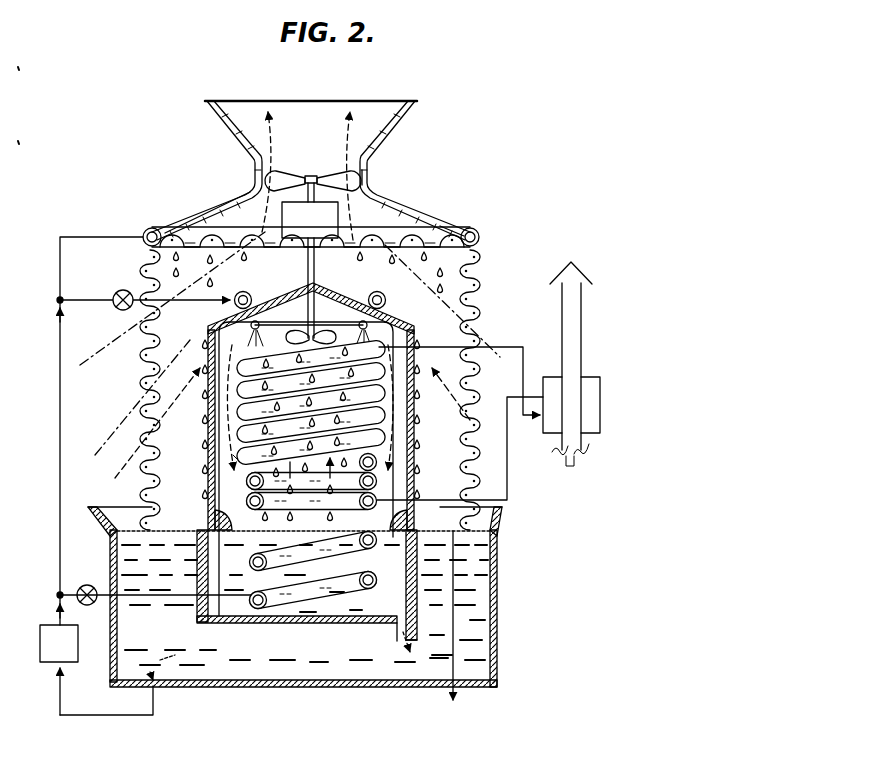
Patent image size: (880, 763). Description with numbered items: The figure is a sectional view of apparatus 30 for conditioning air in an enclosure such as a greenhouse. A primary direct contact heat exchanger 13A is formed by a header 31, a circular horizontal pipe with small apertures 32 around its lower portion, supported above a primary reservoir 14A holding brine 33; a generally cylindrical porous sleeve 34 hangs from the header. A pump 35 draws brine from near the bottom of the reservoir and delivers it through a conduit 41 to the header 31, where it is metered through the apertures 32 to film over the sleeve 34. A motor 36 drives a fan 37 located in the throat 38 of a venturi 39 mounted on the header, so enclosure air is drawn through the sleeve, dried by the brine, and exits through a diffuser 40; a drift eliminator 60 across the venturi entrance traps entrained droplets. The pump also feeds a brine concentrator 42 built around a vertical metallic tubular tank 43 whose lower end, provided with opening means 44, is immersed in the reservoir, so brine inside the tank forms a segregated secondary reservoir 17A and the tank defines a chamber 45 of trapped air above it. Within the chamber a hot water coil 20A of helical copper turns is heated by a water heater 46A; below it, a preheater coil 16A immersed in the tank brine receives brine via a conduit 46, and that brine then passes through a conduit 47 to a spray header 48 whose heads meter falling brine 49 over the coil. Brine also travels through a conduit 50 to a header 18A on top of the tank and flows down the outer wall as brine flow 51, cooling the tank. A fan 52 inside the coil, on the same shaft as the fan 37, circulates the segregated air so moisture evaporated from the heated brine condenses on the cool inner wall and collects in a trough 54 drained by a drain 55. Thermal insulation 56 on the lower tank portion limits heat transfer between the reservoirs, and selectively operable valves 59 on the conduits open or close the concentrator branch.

The diffuser 40 is at (403, 120).
The venturi 39 is at (417, 207).
The drift eliminator 60 is at (434, 223).
The fan 37 is at (357, 187).
The throat 38 is at (311, 176).
The motor 36 is at (322, 240).
The header 31 is at (478, 233).
The apertures 32 is at (481, 241).
The apparatus 30 is at (484, 268).
The porous sleeve 34 is at (477, 302).
The conduit 41 is at (59, 272).
The conduit 50 is at (76, 304).
The selectively operable valves 59 is at (122, 289).
The conduit 46 is at (122, 598).
The pump 35 is at (64, 670).
The header 18A is at (275, 276).
The spray header 48 is at (338, 311).
The brine flow on tank outer surface 51 is at (207, 349).
The conduit 47 is at (406, 463).
The secondary reservoir 17A is at (301, 606).
The opening means 44 is at (395, 636).
The tubular tank 43 is at (218, 431).
The chamber 45 is at (207, 411).
The primary direct contact heat exchanger 13A is at (142, 380).
The brine concentrator 42 is at (445, 376).
The thermal insulation 56 is at (206, 471).
The trough 54 is at (213, 514).
The fan 52 is at (302, 333).
The hot water coil 20A is at (396, 441).
The falling brine 49 is at (246, 453).
The preheater coil 16A is at (338, 592).
The water heater 46A is at (588, 359).
The primary reservoir 14A is at (498, 646).
The brine 33 is at (462, 578).
The drain 55 is at (455, 641).